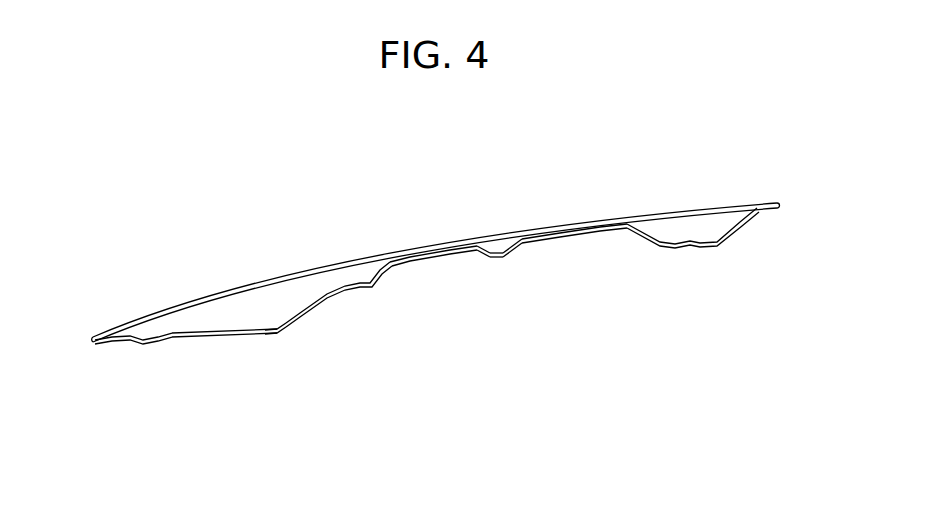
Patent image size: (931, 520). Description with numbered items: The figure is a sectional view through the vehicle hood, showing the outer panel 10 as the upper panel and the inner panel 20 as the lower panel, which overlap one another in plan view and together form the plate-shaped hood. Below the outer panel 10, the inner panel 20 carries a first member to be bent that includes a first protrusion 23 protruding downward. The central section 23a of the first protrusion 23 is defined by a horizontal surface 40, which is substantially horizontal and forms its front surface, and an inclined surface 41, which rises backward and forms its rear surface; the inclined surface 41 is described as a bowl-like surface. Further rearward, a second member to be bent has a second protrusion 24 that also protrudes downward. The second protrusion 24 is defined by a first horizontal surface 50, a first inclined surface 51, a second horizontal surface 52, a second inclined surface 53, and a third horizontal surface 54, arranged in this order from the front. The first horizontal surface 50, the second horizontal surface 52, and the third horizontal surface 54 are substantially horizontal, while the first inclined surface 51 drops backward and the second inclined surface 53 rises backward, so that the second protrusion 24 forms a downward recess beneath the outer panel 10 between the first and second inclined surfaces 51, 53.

The outer panel 10 is at (197, 295).
The inner panel 20 is at (173, 341).
The horizontal surface 40 is at (228, 336).
The inclined surface 41 is at (313, 312).
The first protrusion 23 is at (300, 398).
The central section 23a is at (278, 336).
The second protrusion 24 is at (489, 258).
The first horizontal surface 50 is at (465, 250).
The first inclined surface 51 is at (481, 256).
The second horizontal surface 52 is at (500, 257).
The second inclined surface 53 is at (524, 246).
The third horizontal surface 54 is at (600, 232).